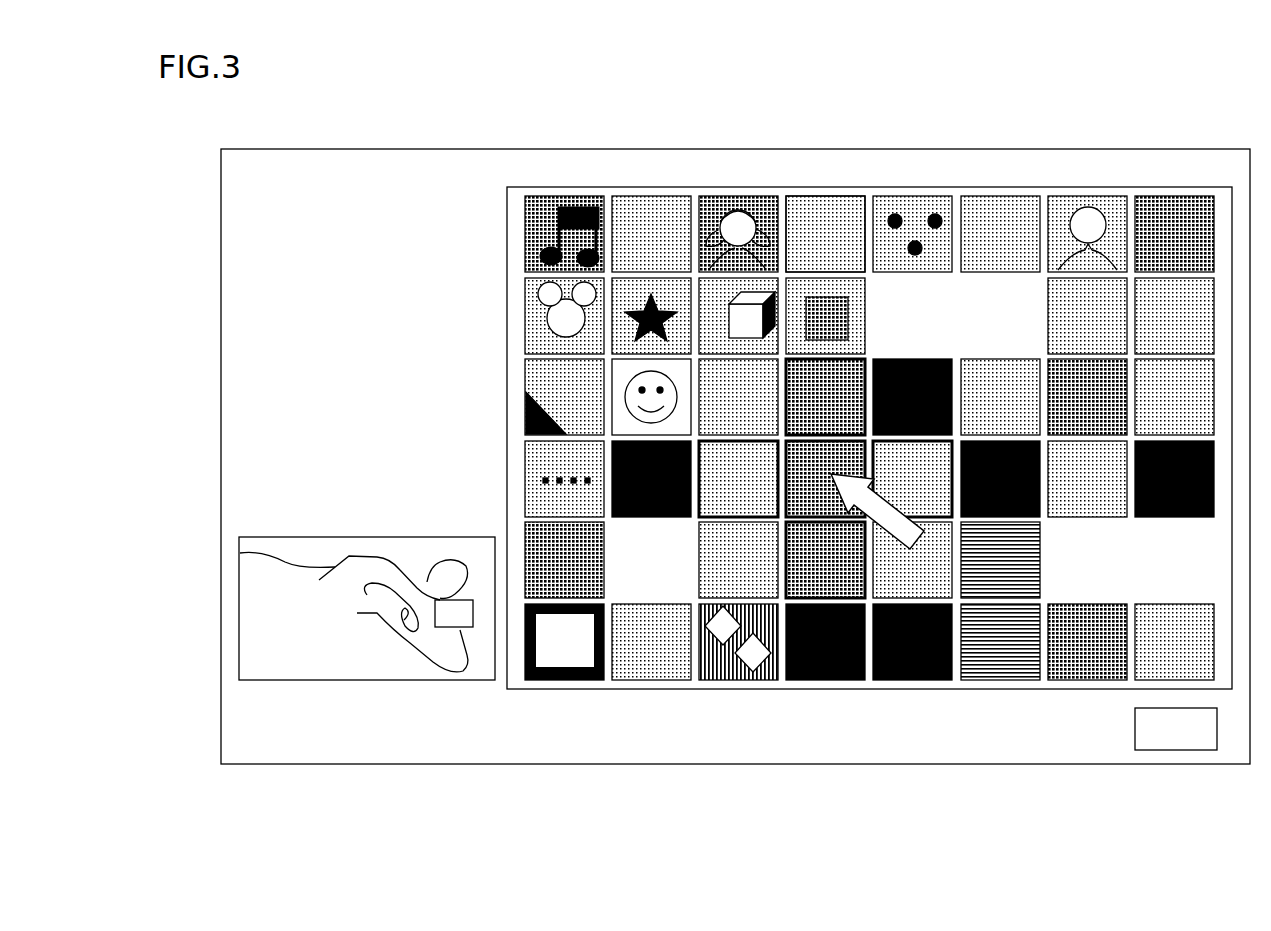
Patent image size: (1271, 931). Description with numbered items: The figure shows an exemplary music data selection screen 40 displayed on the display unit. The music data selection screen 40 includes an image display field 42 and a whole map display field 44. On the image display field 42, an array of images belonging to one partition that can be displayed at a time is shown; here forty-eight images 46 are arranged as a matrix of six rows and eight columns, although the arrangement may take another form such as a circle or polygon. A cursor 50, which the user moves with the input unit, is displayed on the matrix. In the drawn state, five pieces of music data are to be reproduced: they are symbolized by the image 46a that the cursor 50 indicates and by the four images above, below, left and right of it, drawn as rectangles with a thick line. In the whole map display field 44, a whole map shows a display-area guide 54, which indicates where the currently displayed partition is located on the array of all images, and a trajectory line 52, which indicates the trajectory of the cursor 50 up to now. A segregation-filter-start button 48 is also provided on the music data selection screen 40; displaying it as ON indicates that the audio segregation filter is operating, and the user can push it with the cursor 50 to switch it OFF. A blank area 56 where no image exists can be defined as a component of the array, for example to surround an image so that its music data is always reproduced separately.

The music data selection screen 40 is at (534, 149).
The image display field 42 is at (869, 516).
The whole map display field 44 is at (355, 680).
The image 46 is at (812, 190).
The image indicated by the cursor 46a is at (805, 510).
The segregation-filter-start button 48 is at (1162, 750).
The cursor 50 is at (903, 548).
The trajectory line 52 is at (240, 553).
The display-area guide 54 is at (450, 608).
The blank area 56 is at (975, 308).